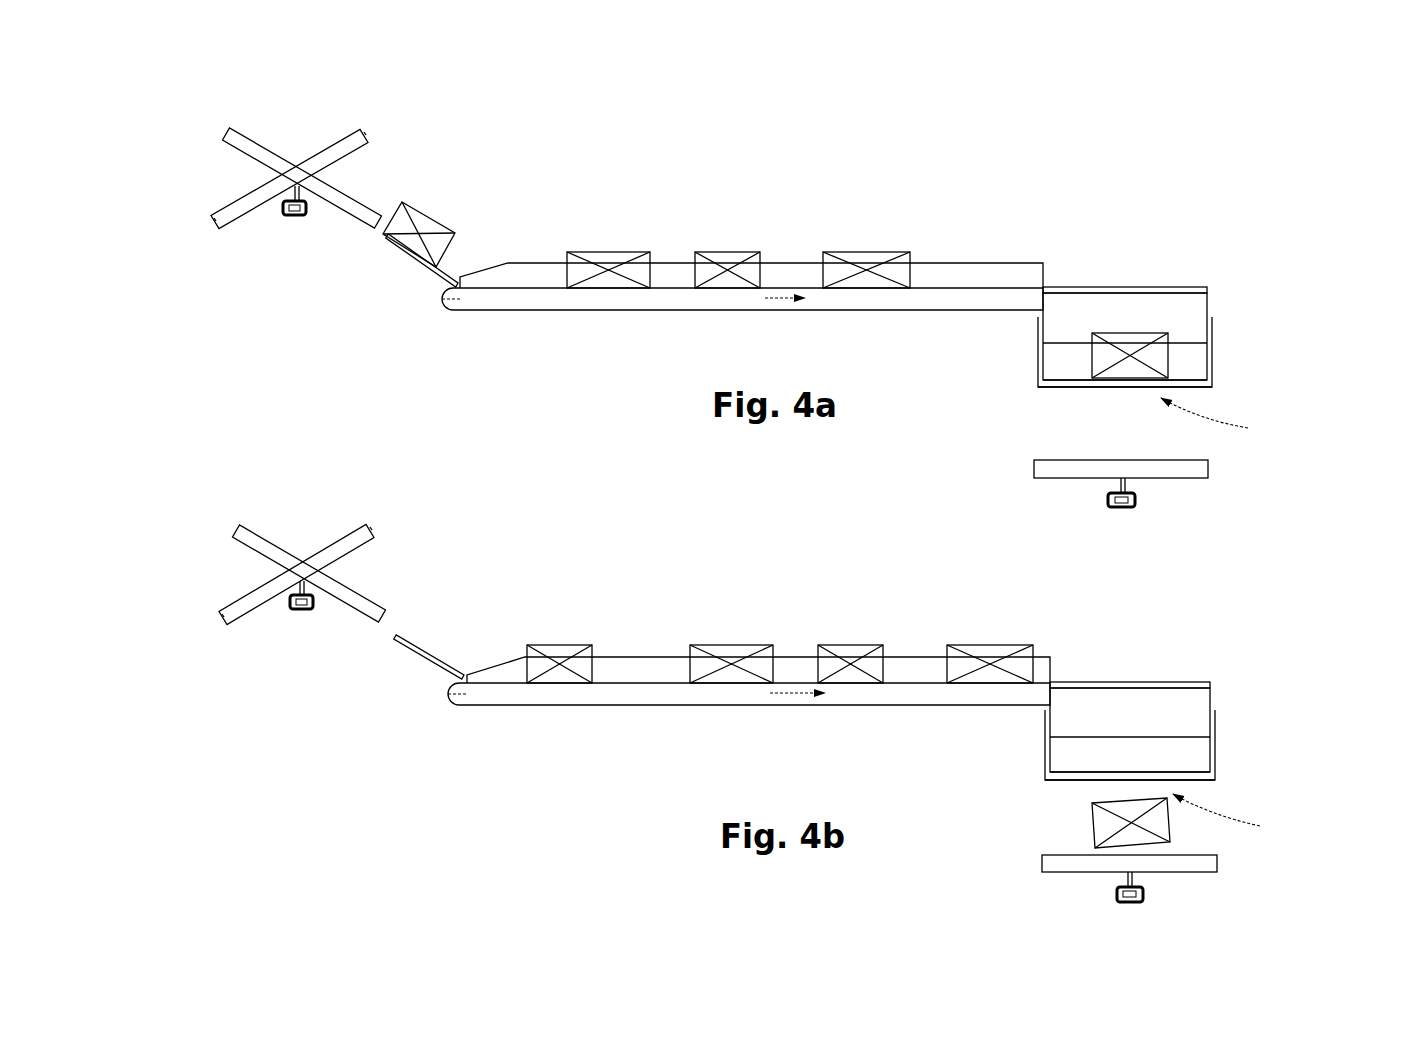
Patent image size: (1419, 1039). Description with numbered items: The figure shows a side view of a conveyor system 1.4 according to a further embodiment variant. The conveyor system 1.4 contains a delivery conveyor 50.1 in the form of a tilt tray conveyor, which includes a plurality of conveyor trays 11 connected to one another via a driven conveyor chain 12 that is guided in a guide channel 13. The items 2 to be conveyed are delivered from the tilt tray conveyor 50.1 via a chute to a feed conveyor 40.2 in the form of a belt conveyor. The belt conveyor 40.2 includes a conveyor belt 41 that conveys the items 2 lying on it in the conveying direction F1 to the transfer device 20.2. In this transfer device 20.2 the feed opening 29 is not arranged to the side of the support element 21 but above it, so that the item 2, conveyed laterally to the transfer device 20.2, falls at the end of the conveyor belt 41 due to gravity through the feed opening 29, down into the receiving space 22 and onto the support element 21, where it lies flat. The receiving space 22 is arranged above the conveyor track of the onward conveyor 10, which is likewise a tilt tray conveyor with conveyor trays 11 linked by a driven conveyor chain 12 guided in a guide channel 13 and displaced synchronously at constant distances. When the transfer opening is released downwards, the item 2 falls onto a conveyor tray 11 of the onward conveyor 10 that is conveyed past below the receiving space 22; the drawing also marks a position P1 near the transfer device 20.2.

In FIG. 4A, the conveyor system 1.4 is at (229, 171).
In FIG. 4B, the conveyor system 1.4 is at (268, 513).
In FIG. 4A, the delivery conveyor 50.1 is at (351, 127).
In FIG. 4B, the delivery conveyor 50.1 is at (351, 525).
In FIG. 4A, the conveyor tray 11 is at (336, 145).
In FIG. 4B, the conveyor tray 11 is at (344, 539).
In FIG. 4A, the conveyor chain 12 is at (306, 215).
In FIG. 4B, the conveyor chain 12 is at (315, 609).
In FIG. 4A, the guide channel 13 is at (283, 207).
In FIG. 4B, the guide channel 13 is at (290, 600).
In FIG. 4A, the item to be conveyed 2 is at (433, 238).
In FIG. 4B, the item to be conveyed 2 is at (547, 654).
In FIG. 4A, the feed conveyor 40.2 is at (957, 284).
In FIG. 4B, the feed conveyor 40.2 is at (657, 682).
In FIG. 4A, the conveyor belt 41 is at (609, 309).
In FIG. 4B, the conveyor belt 41 is at (647, 704).
In FIG. 4A, the conveying direction F1 is at (765, 299).
In FIG. 4B, the conveying direction F1 is at (790, 694).
In FIG. 4A, the transfer device 20.2 is at (1213, 320).
In FIG. 4B, the transfer device 20.2 is at (1220, 710).
In FIG. 4A, the feed opening 29 is at (1111, 285).
In FIG. 4B, the feed opening 29 is at (1129, 680).
In FIG. 4A, the receiving space 22 is at (1075, 358).
In FIG. 4B, the receiving space 22 is at (1090, 755).
In FIG. 4A, the support element 21 is at (1056, 381).
In FIG. 4B, the support element 21 is at (1066, 773).
In FIG. 4A, the position P1 is at (1222, 422).
In FIG. 4B, the position P1 is at (1234, 819).
In FIG. 4A, the onward conveyor 10 is at (1043, 460).
In FIG. 4B, the onward conveyor 10 is at (1047, 853).